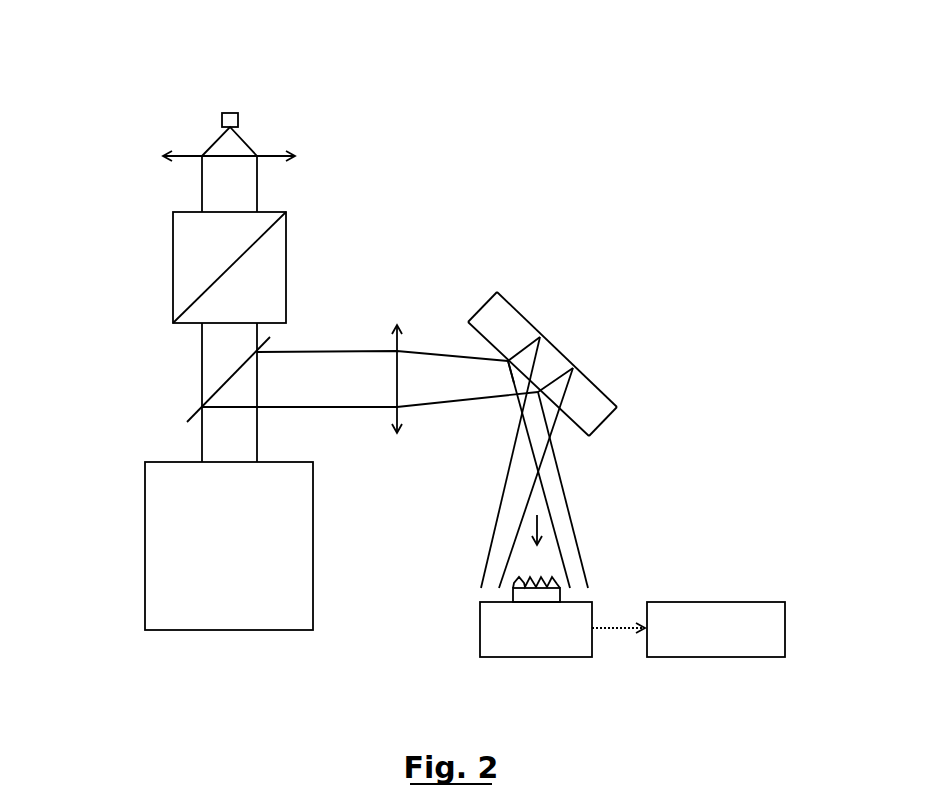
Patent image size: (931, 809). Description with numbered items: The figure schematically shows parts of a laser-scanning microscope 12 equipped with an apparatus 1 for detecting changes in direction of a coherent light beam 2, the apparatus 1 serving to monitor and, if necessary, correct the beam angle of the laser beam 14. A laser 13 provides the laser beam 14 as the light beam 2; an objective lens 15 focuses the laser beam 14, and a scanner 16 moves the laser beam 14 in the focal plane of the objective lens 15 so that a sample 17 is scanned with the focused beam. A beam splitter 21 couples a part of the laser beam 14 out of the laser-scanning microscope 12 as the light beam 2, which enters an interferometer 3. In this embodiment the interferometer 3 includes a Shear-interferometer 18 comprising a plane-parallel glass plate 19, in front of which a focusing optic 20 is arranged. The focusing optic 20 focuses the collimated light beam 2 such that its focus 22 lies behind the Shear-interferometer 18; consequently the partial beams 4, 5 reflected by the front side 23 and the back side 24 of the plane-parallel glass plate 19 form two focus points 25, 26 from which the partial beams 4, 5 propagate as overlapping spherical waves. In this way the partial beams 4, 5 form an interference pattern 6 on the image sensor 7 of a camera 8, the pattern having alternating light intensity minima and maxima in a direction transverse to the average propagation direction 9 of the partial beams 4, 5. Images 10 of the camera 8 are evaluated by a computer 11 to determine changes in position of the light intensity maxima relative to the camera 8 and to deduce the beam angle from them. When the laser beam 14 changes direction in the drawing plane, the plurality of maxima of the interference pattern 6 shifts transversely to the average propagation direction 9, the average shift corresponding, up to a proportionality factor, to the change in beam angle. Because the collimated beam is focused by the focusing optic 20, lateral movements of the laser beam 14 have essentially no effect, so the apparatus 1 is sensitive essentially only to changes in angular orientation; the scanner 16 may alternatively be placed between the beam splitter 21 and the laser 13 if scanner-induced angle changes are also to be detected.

The apparatus 1 is at (643, 187).
The light beam 2 is at (323, 373).
The interferometer 3 is at (610, 346).
The partial beam 4 is at (508, 418).
The partial beam 5 is at (562, 432).
The interference pattern 6 is at (569, 574).
The image sensor 7 is at (560, 597).
The camera 8 is at (557, 658).
The average propagation direction 9 is at (537, 527).
The images 10 is at (614, 643).
The computer 11 is at (728, 588).
The laser-scanning microscope 12 is at (124, 347).
The laser 13 is at (145, 540).
The laser beam 14 is at (215, 440).
The objective lens 15 is at (265, 153).
The scanner 16 is at (299, 251).
The sample 17 is at (225, 113).
The Shear-interferometer 18 is at (531, 296).
The plane-parallel glass plate 19 is at (479, 290).
The focusing optic 20 is at (396, 450).
The beam splitter 21 is at (183, 388).
The focus 22 is at (498, 438).
The front side 23 is at (483, 340).
The back side 24 is at (535, 327).
The focus point 25 is at (528, 427).
The focus point 26 is at (572, 412).